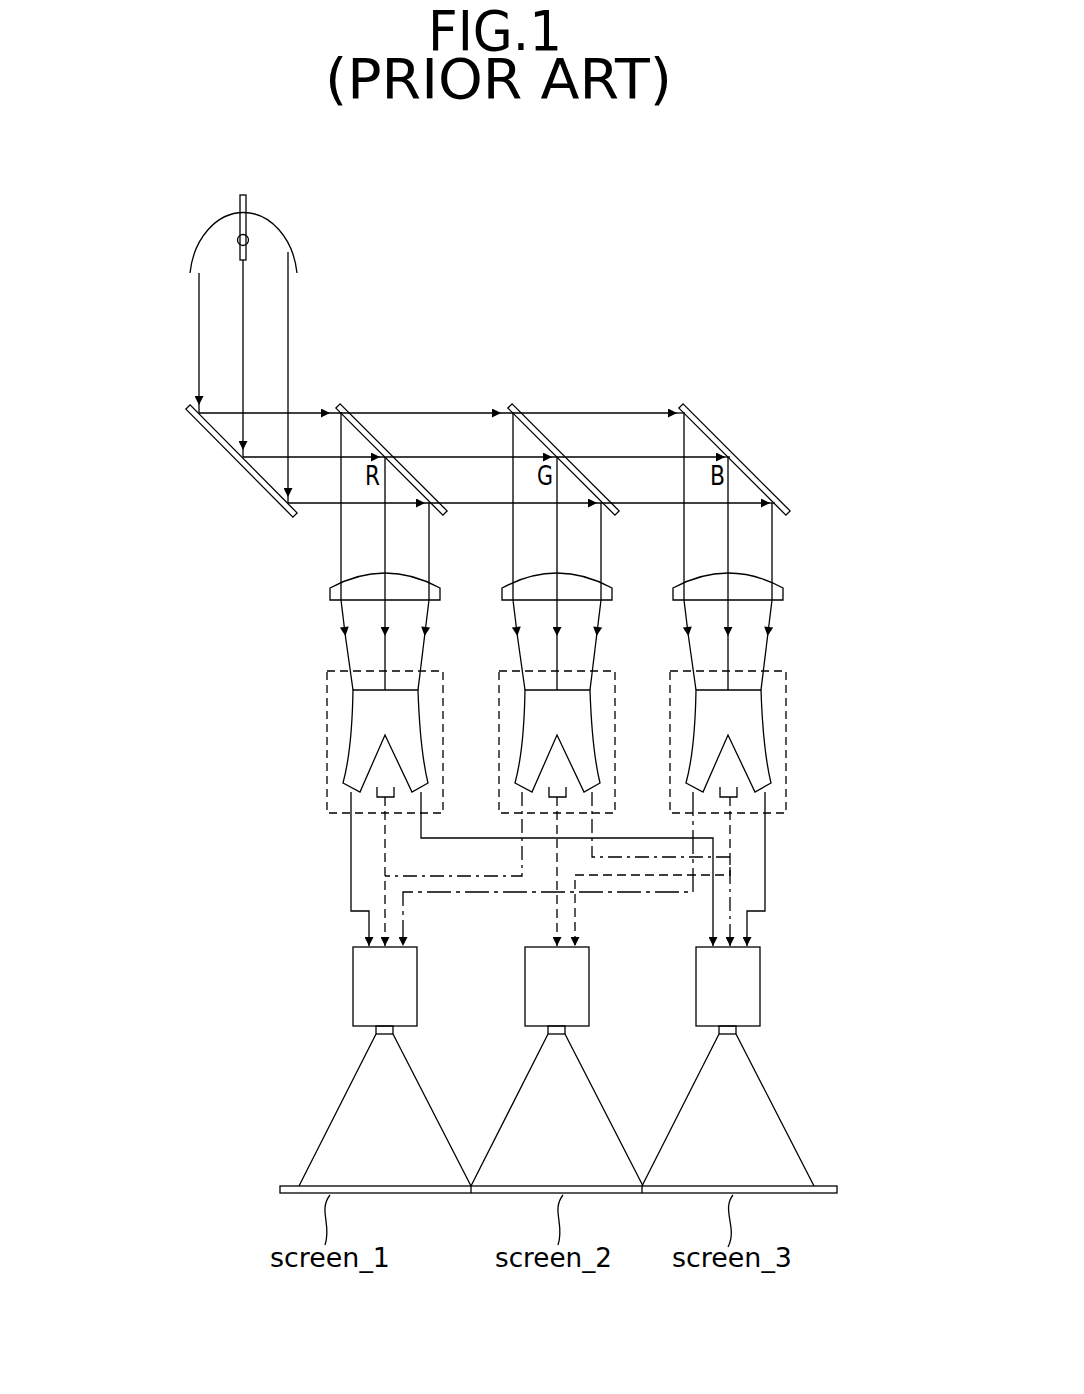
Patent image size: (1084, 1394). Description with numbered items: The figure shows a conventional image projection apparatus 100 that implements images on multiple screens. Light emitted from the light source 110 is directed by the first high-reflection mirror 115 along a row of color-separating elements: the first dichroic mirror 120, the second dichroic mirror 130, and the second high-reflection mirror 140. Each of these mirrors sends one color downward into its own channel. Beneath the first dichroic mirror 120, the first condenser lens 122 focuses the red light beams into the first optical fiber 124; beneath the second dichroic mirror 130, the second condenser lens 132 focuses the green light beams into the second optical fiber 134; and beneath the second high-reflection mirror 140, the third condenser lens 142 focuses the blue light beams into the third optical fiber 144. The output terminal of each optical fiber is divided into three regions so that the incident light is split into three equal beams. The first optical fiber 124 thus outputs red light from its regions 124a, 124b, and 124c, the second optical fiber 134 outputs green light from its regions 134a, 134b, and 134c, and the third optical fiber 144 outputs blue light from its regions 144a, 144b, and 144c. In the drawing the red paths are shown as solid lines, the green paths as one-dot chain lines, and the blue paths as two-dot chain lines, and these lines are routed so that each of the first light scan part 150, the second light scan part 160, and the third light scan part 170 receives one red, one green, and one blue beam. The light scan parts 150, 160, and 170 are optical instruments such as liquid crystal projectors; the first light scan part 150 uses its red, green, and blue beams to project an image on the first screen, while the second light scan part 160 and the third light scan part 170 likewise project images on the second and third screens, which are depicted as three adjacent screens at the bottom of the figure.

The image projection apparatus 100 is at (439, 224).
The light source 110 is at (252, 240).
The first high-reflection mirror 115 is at (243, 460).
The first dichroic mirror 120 is at (372, 437).
The first condenser lens 122 is at (337, 590).
The first optical fiber 124 is at (327, 683).
The first region of the first optical fiber output terminal 124a is at (357, 780).
The second region of the first optical fiber output terminal 124b is at (382, 798).
The third region of the first optical fiber output terminal 124c is at (420, 770).
The second dichroic mirror 130 is at (543, 435).
The second condenser lens 132 is at (580, 582).
The second optical fiber 134 is at (510, 667).
The first region of the second optical fiber output terminal 134a is at (524, 780).
The second region of the second optical fiber output terminal 134b is at (592, 790).
The third region of the second optical fiber output terminal 134c is at (590, 772).
The second high-reflection mirror 140 is at (712, 433).
The third condenser lens 142 is at (780, 582).
The third optical fiber 144 is at (787, 686).
The first region of the third optical fiber output terminal 144a is at (694, 778).
The second region of the third optical fiber output terminal 144b is at (742, 795).
The third region of the third optical fiber output terminal 144c is at (770, 775).
The first light scan part 150 is at (356, 987).
The second light scan part 160 is at (588, 985).
The third light scan part 170 is at (762, 990).